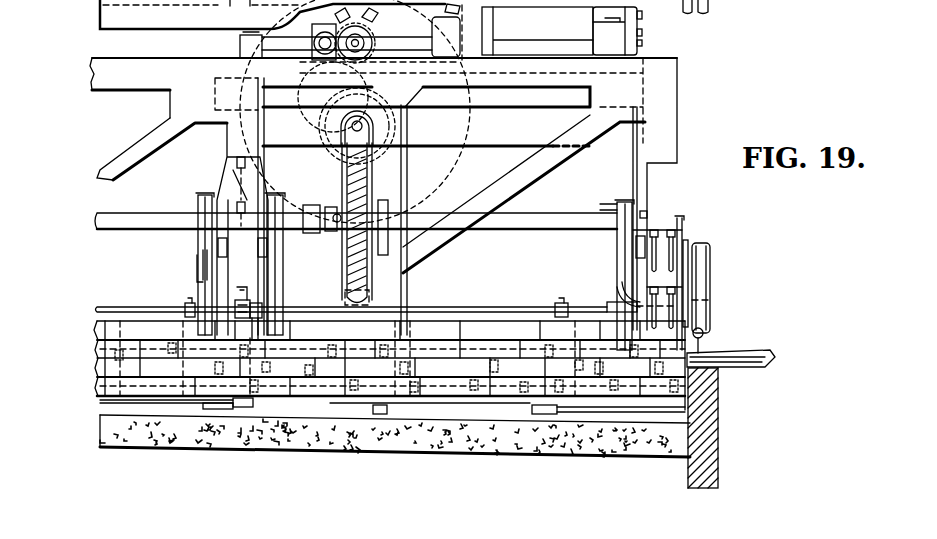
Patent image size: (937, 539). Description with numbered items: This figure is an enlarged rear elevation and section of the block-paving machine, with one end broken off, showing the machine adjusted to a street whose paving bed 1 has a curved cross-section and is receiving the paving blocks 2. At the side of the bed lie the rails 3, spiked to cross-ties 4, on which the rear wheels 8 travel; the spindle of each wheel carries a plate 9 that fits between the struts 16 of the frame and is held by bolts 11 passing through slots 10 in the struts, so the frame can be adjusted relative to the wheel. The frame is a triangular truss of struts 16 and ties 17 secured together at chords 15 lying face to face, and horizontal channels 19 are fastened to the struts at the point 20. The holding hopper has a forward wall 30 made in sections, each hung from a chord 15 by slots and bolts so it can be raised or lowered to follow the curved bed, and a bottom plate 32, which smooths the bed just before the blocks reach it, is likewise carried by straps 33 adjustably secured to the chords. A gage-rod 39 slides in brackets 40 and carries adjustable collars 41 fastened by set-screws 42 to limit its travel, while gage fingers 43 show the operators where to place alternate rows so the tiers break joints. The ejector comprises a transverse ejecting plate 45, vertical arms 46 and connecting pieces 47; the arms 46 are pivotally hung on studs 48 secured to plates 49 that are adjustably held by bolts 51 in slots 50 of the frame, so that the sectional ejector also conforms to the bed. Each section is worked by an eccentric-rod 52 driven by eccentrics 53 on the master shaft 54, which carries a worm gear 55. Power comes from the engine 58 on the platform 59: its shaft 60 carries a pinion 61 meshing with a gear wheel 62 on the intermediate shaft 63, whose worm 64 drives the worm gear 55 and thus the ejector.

The paving bed 1 is at (113, 447).
The paving blocks 2 is at (95, 345).
The rails 3 is at (705, 340).
The cross-ties 4 is at (765, 360).
The rear wheels 8 is at (712, 306).
The plate 9 is at (683, 218).
The slots 10 is at (678, 262).
The bolts 11 is at (656, 232).
The chords 15 is at (115, 68).
The struts 16 is at (667, 78).
The ties 17 is at (97, 167).
The horizontal channels 19 is at (217, 247).
The point 20 is at (230, 236).
The forward wall 30 is at (97, 322).
The bottom plate 32 is at (100, 422).
The straps 33 is at (262, 400).
The gage-rod 39 is at (107, 305).
The brackets 40 is at (236, 292).
The adjustable collars 41 is at (185, 305).
The set-screws 42 is at (190, 300).
The gage fingers 43 is at (263, 318).
The transverse plate 45 is at (137, 404).
The vertical arms 46 is at (741, 474).
The connecting pieces 47 is at (100, 408).
The studs 48 is at (198, 200).
The plates 49 is at (249, 179).
The slots 50 is at (242, 206).
The bolts 51 is at (240, 207).
The eccentric-rod 52 is at (200, 274).
The eccentrics 53 is at (200, 233).
The master shaft 54 is at (97, 220).
The worm gear 55 is at (362, 195).
The motor or engine 58 is at (642, 22).
The platform 59 is at (483, 142).
The shaft 60 is at (372, 42).
The pinion 61 is at (366, 28).
The gear wheel 62 is at (399, 148).
The intermediate shaft 63 is at (373, 121).
The worm 64 is at (373, 133).